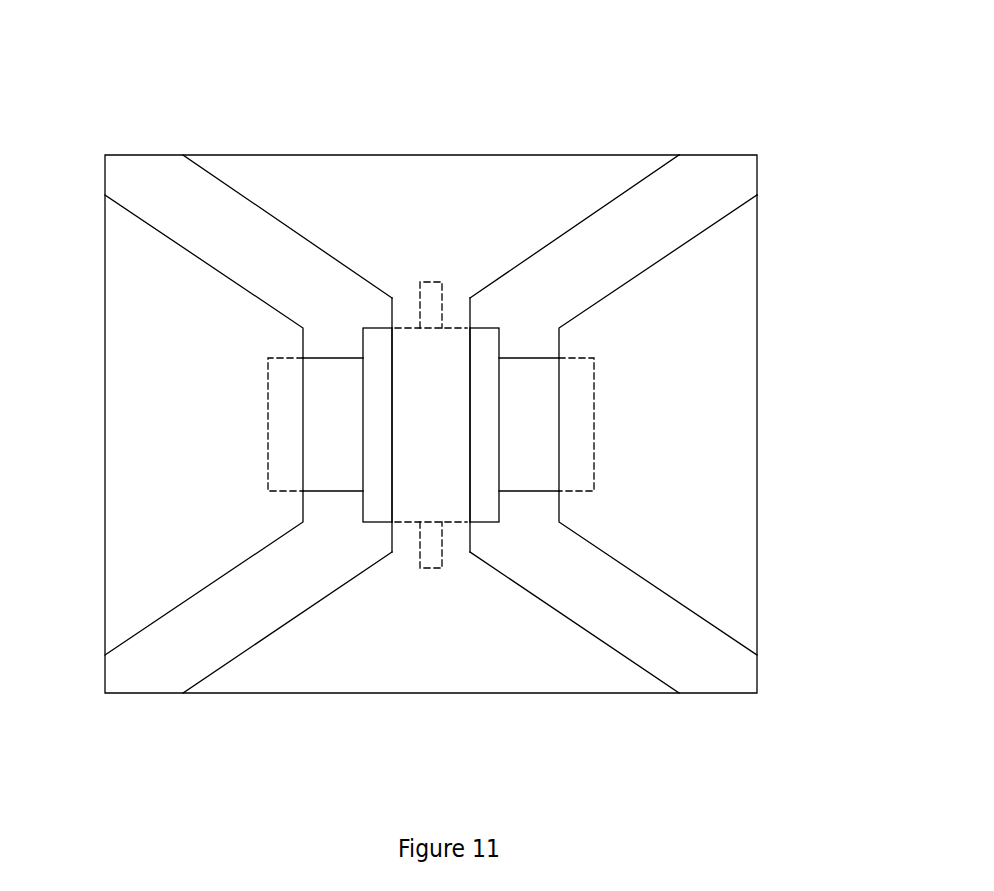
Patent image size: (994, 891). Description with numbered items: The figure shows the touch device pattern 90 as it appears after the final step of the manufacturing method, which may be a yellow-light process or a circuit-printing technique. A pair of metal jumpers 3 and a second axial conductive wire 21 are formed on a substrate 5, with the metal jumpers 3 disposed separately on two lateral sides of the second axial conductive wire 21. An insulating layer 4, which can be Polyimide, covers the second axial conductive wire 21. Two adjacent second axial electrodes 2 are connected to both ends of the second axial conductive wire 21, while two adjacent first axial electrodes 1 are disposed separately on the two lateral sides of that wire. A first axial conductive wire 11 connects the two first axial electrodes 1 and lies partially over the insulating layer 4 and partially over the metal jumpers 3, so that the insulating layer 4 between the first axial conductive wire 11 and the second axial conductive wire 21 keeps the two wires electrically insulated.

The touch device pattern 90 is at (173, 47).
The first axial electrode 1 is at (485, 187).
The substrate 5 is at (722, 182).
The second axial electrode 2 is at (156, 426).
The first axial conductive wire 11 is at (404, 310).
The metal jumper 3 is at (432, 290).
The insulating layer 4 is at (452, 455).
The second axial conductive wire 21 is at (573, 387).